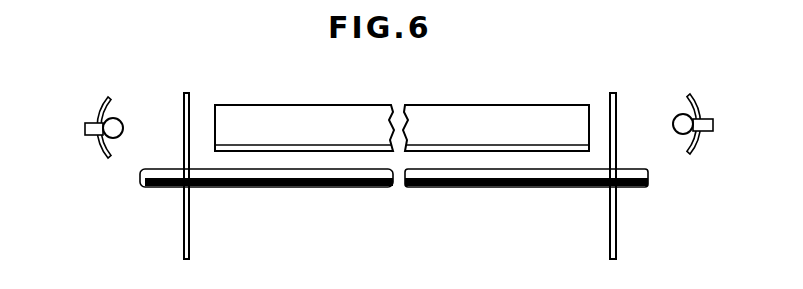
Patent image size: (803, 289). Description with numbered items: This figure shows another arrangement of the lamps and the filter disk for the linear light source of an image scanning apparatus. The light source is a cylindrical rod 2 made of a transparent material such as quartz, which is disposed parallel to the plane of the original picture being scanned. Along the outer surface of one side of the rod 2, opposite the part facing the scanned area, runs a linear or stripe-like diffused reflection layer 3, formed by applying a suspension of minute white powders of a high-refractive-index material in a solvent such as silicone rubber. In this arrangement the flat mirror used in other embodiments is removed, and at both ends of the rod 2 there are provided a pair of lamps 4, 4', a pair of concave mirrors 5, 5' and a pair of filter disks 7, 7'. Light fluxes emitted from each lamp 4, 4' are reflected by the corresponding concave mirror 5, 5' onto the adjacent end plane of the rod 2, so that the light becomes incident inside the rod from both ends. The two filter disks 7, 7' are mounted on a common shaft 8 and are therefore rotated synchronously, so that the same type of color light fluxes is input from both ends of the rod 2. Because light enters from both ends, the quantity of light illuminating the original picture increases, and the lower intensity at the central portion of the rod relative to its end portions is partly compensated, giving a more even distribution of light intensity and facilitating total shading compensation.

The cylindrical rod 2 is at (537, 103).
The diffused reflection layer 3 is at (520, 152).
The lamp 4 is at (121, 90).
The lamp 4' is at (675, 88).
The concave mirror 5 is at (95, 100).
The concave mirror 5' is at (700, 98).
The filter disk 7 is at (215, 177).
The filter disk 7' is at (574, 177).
The common shaft 8 is at (305, 187).